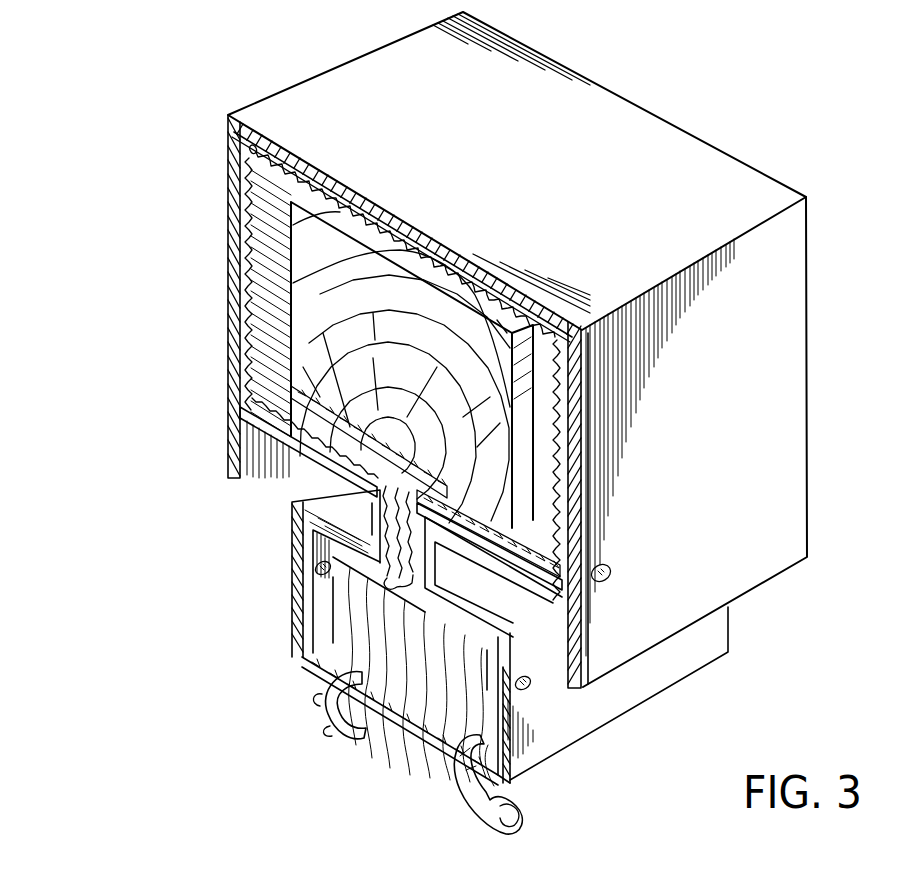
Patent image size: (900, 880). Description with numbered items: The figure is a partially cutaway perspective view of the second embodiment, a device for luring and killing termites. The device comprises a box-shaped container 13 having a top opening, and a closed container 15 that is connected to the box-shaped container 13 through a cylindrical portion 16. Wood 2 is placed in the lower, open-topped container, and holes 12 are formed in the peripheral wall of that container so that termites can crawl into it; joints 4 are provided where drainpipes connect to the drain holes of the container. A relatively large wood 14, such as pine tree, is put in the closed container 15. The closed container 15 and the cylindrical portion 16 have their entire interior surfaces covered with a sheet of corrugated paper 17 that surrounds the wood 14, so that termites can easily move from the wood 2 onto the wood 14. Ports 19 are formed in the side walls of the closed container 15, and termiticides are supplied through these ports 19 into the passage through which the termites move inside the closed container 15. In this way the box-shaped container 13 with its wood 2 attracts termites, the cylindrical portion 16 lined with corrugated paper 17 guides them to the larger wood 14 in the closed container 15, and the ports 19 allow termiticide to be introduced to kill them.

The closed container 15 is at (668, 152).
The sheet of corrugated paper 17 is at (262, 240).
The relatively large wood 14 is at (298, 313).
The cylindrical portion 16 is at (322, 505).
The wood 2 is at (345, 627).
The holes 12 is at (318, 572).
The ports 19 is at (608, 580).
The box-shaped container 13 is at (608, 685).
The joints 4 is at (358, 740).